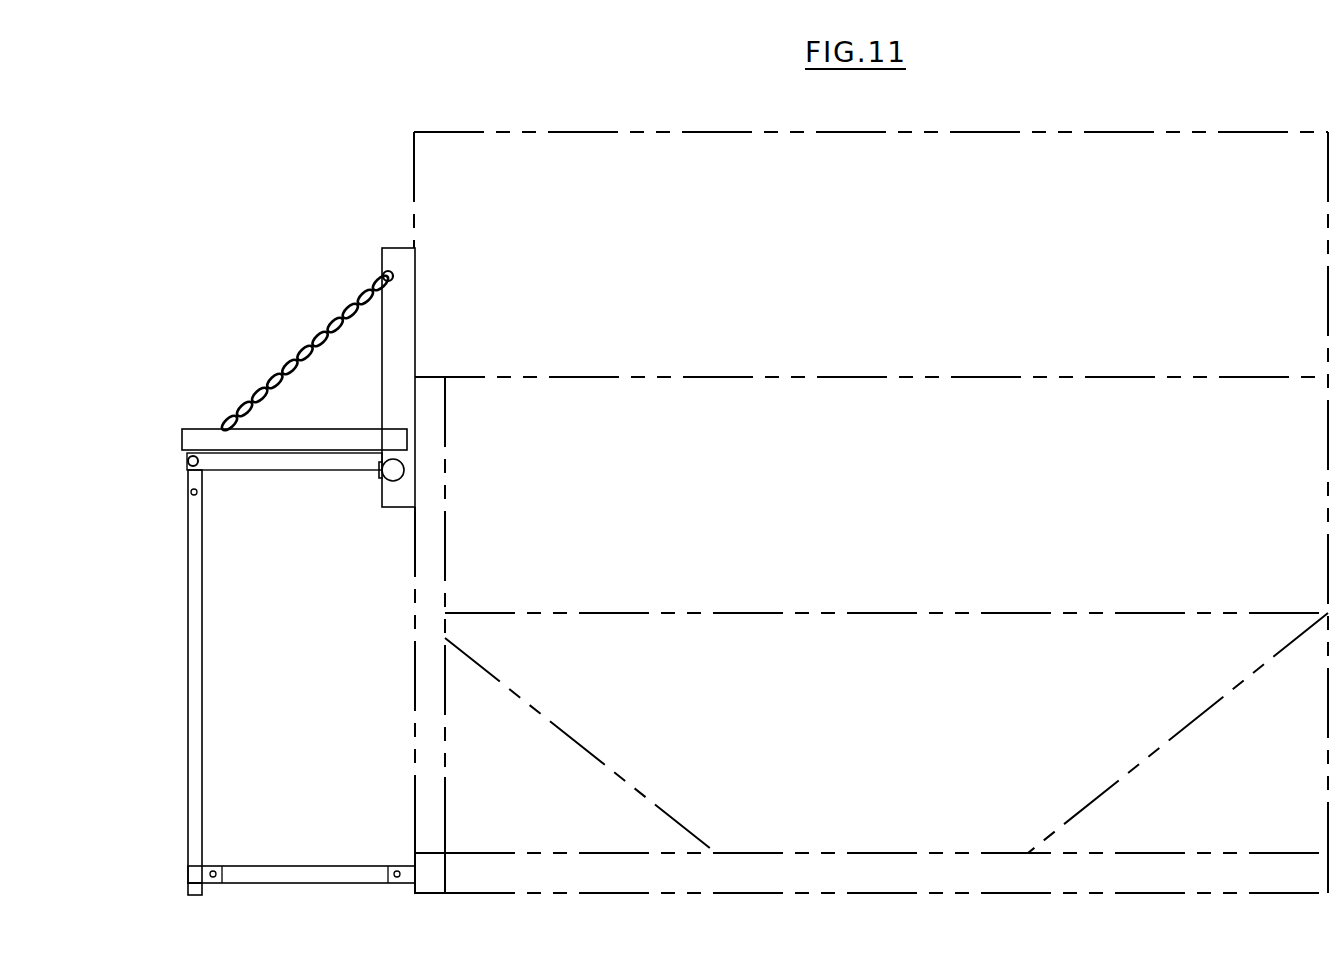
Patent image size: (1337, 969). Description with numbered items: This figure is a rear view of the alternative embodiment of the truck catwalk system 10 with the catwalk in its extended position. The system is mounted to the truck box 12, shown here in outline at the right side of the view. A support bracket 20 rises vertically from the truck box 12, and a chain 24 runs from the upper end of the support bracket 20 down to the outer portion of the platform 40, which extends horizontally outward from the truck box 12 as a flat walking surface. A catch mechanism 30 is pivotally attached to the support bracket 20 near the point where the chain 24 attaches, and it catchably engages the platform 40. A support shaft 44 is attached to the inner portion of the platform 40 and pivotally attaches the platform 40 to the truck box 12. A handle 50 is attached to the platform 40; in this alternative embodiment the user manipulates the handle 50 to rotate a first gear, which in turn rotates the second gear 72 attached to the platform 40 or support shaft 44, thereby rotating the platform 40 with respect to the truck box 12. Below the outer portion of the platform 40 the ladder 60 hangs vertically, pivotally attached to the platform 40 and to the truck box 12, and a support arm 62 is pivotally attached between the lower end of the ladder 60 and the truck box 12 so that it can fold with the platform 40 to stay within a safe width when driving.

The truck catwalk system 10 is at (296, 100).
The truck box 12 is at (650, 126).
The support bracket 20 is at (416, 284).
The chain 24 is at (335, 312).
The catch mechanism 30 is at (378, 264).
The platform 40 is at (233, 470).
The support shaft 44 is at (403, 476).
The handle 50 is at (402, 420).
The ladder 60 is at (203, 738).
The support arm 62 is at (300, 866).
The second gear 72 is at (380, 475).